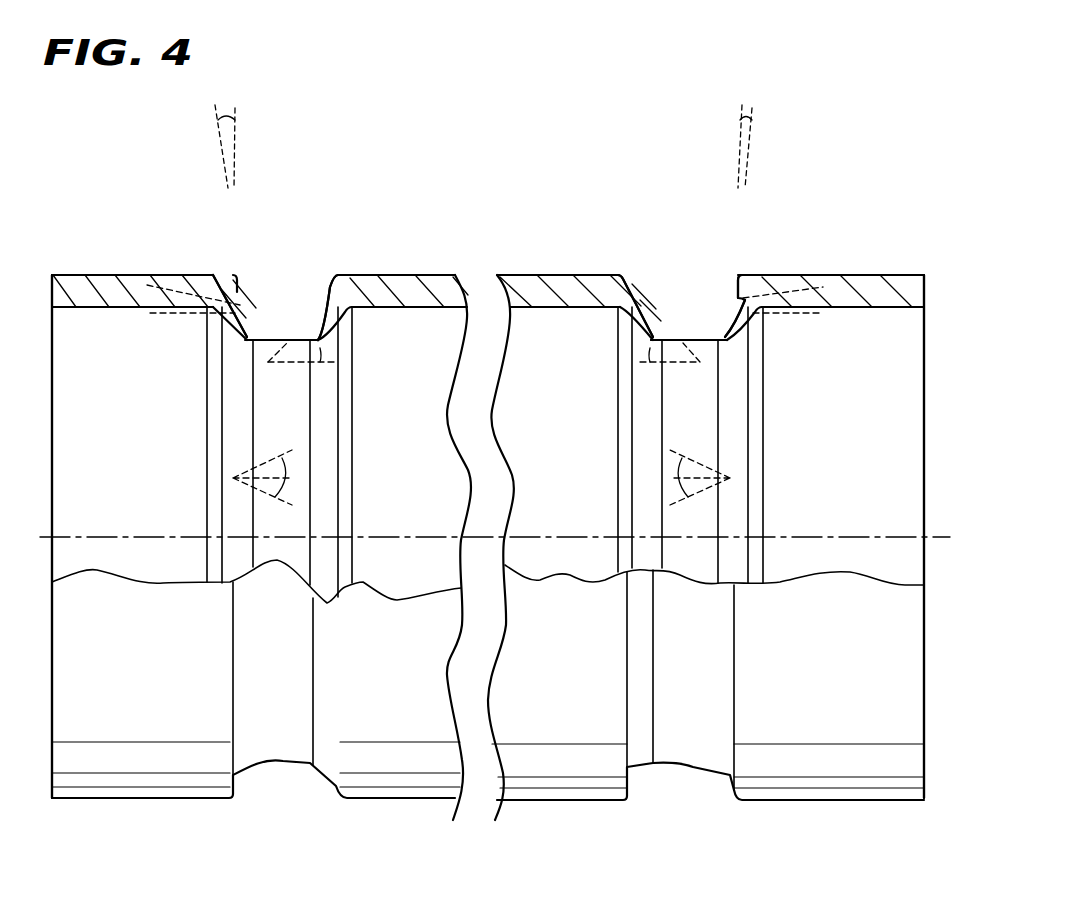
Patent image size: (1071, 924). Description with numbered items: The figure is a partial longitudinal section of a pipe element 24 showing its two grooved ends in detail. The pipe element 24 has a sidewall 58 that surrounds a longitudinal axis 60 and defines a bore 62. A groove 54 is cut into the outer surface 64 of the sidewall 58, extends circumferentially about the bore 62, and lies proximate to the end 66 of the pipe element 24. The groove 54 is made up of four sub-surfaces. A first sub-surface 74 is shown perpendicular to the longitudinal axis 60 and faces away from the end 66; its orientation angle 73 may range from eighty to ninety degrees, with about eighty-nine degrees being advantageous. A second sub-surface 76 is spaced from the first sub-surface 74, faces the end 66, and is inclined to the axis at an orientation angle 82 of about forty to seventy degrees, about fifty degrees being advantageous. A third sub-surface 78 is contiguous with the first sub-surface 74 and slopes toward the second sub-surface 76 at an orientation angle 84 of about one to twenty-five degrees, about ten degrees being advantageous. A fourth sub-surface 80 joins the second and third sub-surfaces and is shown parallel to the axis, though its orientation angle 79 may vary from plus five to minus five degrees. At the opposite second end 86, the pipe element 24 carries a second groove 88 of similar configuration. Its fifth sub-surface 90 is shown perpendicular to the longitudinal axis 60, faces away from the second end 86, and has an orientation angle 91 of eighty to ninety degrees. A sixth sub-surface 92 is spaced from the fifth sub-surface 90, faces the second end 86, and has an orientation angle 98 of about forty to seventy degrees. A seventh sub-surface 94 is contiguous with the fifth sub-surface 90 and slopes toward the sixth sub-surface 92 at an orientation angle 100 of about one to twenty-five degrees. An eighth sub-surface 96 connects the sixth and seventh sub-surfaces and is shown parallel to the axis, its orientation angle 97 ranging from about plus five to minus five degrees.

The pipe element 24 is at (515, 787).
The groove 54 is at (250, 340).
The sidewall 58 is at (88, 300).
The longitudinal axis 60 is at (95, 540).
The bore 62 is at (424, 585).
The outer surface 64 is at (458, 270).
The end 66 is at (50, 278).
The orientation angle 73 is at (227, 120).
The first sub-surface 74 is at (237, 292).
The second sub-surface 76 is at (317, 298).
The third sub-surface 78 is at (253, 303).
The orientation angle 79 is at (308, 496).
The fourth sub-surface 80 is at (290, 343).
The orientation angle 82 is at (320, 358).
The orientation angle 84 is at (158, 293).
The second end 86 is at (923, 755).
The second groove 88 is at (737, 322).
The fifth sub-surface 90 is at (724, 277).
The orientation angle 91 is at (748, 120).
The sixth sub-surface 92 is at (655, 305).
The seventh sub-surface 94 is at (712, 300).
The eighth sub-surface 96 is at (672, 315).
The orientation angle 97 is at (668, 480).
The orientation angle 98 is at (648, 358).
The orientation angle 100 is at (837, 278).